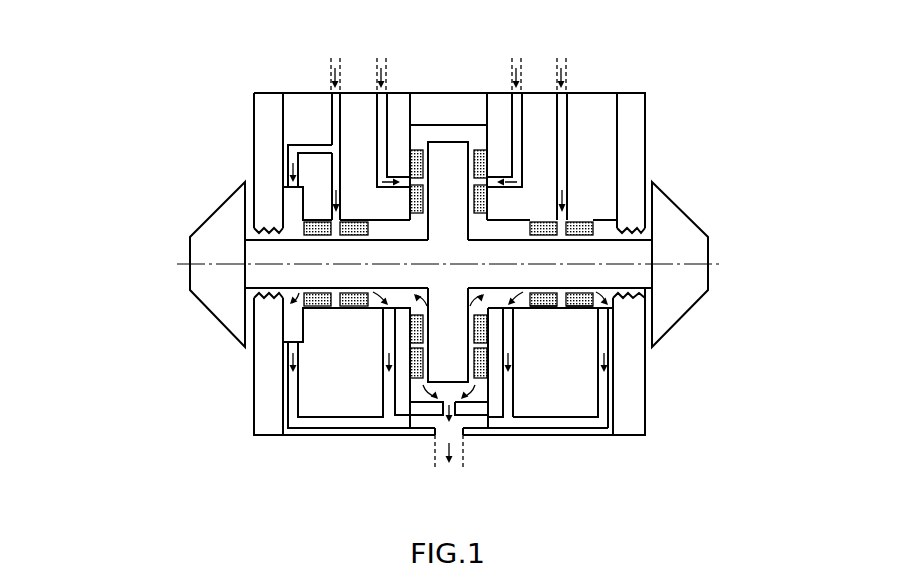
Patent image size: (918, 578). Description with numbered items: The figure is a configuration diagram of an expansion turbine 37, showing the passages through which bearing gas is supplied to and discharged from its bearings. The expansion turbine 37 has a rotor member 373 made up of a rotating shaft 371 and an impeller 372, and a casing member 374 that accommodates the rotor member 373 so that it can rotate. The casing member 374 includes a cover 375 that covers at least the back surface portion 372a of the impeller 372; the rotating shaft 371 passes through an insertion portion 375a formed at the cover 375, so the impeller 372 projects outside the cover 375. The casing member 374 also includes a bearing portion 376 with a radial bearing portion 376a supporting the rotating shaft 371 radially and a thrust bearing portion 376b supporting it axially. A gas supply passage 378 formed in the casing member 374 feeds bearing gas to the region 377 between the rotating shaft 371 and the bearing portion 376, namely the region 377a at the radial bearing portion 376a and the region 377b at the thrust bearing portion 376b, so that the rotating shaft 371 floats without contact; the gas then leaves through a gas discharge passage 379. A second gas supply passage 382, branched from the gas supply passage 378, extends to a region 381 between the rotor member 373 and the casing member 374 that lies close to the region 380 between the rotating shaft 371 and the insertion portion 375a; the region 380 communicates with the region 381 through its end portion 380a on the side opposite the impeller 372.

The expansion turbine 37 is at (478, 62).
The rotating shaft 371 is at (637, 273).
The impeller 372 is at (217, 207).
The back surface portion 372a is at (265, 318).
The rotor member 373 is at (172, 282).
The casing member 374 is at (652, 77).
The cover 375 is at (252, 120).
The insertion portion 375a is at (272, 243).
The bearing portion 376 is at (773, 360).
The radial bearing portion 376a is at (580, 303).
The thrust bearing portion 376b is at (486, 362).
The region 377 is at (350, 237).
The region 377a is at (580, 238).
The region 377b is at (480, 158).
The gas supply passage 378 is at (332, 117).
The gas discharge passage 379 is at (345, 430).
The region 380 is at (282, 297).
The end portion 380a is at (289, 312).
The region 381 is at (291, 207).
The gas supply passage 382 is at (298, 143).